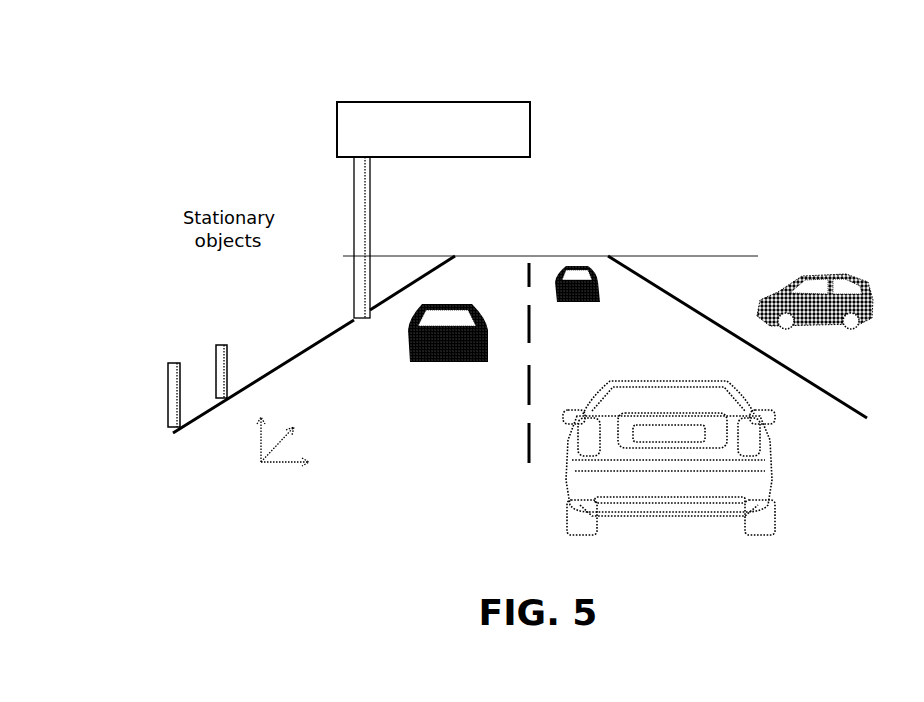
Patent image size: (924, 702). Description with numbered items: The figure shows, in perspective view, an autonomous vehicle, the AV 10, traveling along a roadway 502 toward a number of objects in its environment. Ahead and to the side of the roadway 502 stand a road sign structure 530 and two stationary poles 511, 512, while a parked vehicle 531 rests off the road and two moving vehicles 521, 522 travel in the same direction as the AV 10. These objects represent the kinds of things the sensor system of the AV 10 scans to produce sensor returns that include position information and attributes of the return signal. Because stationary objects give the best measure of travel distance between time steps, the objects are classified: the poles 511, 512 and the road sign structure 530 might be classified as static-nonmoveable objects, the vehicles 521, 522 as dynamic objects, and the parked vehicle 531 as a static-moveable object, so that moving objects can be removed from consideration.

The AV 10 is at (658, 405).
The roadway 502 is at (852, 497).
The stationary pole 511 is at (174, 361).
The stationary pole 512 is at (220, 342).
The moving vehicle 521 is at (588, 257).
The moving vehicle 522 is at (418, 357).
The road sign structure 530 is at (415, 139).
The parked vehicle 531 is at (808, 272).